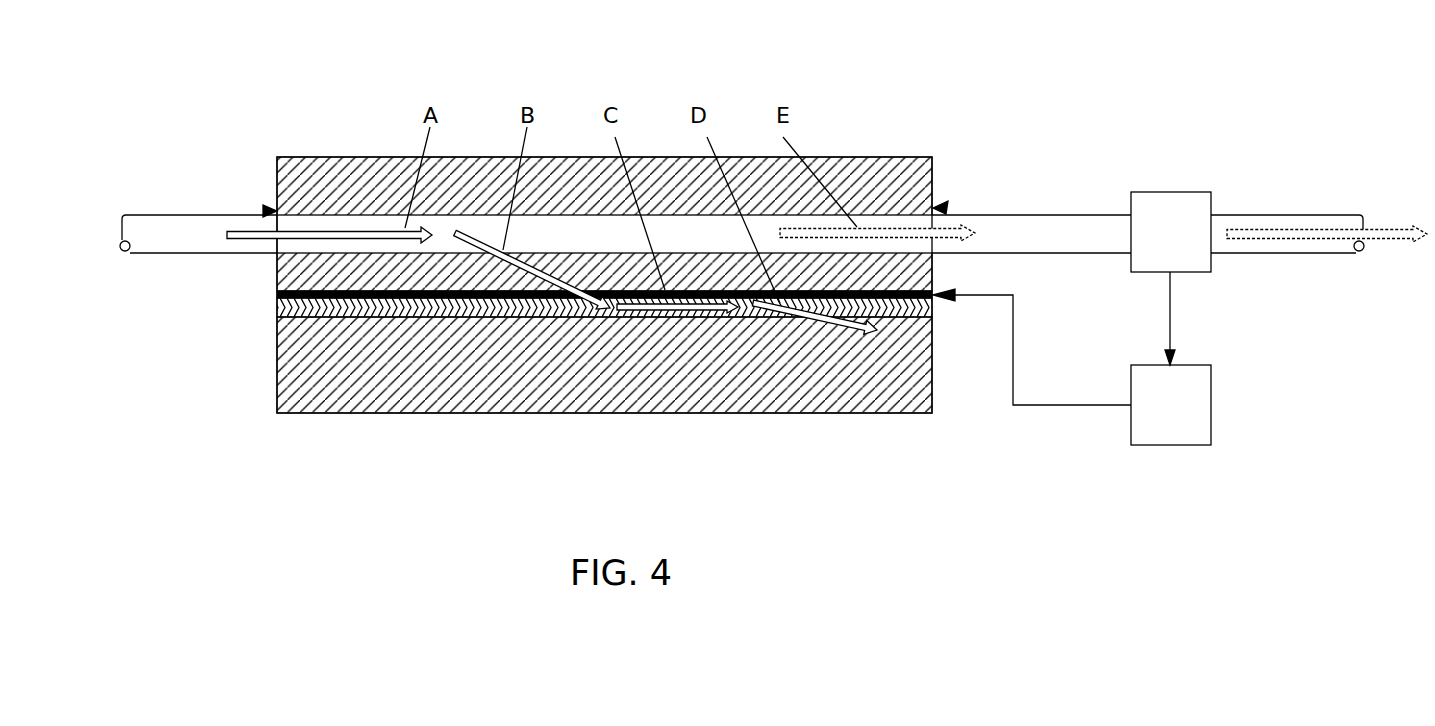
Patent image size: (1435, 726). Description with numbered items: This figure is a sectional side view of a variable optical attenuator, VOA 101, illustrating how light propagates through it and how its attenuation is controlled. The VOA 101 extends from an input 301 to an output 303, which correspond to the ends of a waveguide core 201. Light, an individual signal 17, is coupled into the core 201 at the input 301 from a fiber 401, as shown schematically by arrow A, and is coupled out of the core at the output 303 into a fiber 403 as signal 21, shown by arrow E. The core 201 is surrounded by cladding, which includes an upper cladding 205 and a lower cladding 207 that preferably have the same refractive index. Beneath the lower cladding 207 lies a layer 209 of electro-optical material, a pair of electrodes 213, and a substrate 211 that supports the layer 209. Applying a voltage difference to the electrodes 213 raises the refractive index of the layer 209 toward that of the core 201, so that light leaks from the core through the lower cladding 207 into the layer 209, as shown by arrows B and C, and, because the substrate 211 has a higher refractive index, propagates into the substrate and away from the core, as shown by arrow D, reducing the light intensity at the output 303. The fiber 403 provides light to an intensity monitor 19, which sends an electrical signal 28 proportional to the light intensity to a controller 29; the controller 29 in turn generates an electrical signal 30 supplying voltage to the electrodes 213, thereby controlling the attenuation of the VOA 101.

The VOA 101 is at (604, 210).
The signal 17 is at (58, 270).
The signal 21 is at (1335, 213).
The intensity monitor 19 is at (1171, 232).
The controller 29 is at (1171, 405).
The signal 28 is at (1172, 333).
The electrical signal 30 is at (1013, 308).
The waveguide core 201 is at (270, 208).
The upper cladding 205 is at (355, 157).
The lower cladding 207 is at (277, 273).
The layer of electro-optical material 209 is at (277, 305).
The substrate 211 is at (277, 355).
The electrodes 213 is at (277, 296).
The input 301 is at (264, 210).
The output 303 is at (946, 207).
The fiber 401 is at (150, 215).
The fiber 403 is at (1014, 212).